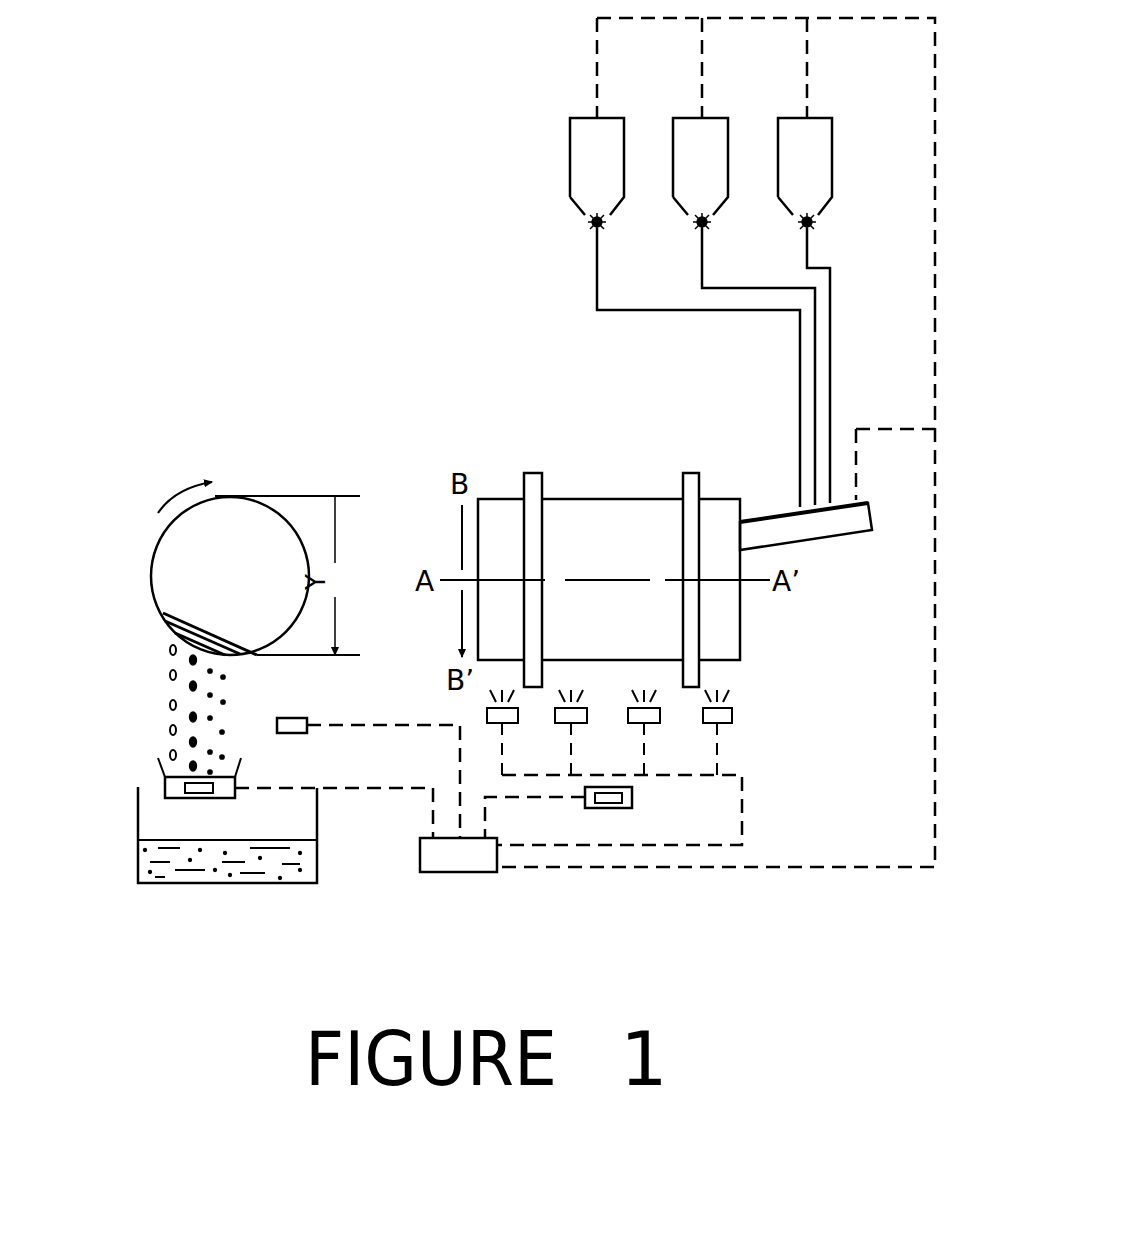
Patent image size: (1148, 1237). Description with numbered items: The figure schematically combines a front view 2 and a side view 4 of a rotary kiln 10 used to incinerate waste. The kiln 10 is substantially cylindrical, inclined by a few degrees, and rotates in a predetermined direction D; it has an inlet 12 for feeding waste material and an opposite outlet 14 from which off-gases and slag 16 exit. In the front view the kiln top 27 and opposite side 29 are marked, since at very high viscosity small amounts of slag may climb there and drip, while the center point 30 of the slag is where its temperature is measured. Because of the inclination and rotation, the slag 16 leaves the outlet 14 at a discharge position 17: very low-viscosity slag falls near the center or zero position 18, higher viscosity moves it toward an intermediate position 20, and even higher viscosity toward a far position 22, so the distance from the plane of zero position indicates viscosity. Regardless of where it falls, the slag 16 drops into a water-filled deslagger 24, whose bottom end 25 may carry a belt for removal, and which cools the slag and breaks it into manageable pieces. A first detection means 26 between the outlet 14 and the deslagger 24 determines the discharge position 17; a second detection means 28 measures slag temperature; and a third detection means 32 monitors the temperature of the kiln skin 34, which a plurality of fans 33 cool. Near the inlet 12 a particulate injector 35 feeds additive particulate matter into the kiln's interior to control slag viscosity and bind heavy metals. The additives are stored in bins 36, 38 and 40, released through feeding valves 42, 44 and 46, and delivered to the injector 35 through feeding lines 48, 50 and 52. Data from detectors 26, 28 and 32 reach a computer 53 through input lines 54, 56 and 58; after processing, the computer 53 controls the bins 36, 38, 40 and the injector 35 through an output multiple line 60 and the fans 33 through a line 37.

The front view 2 is at (260, 338).
The side view 4 is at (397, 233).
The rotary kiln 10 is at (578, 418).
The inlet 12 is at (740, 613).
The outlet 14 is at (235, 553).
The slag 16 is at (167, 613).
The discharge position 17 is at (193, 740).
The center or zero position 18 is at (223, 733).
The intermediate position 20 is at (210, 697).
The far position 22 is at (167, 648).
The deslagger 24 is at (302, 860).
The bottom end 25 is at (163, 877).
The first detection means 26 is at (180, 787).
The top 27 is at (228, 517).
The second detection means 28 is at (288, 728).
The opposite side 29 is at (295, 578).
The center point 30 is at (235, 633).
The third detection means 32 is at (610, 798).
The fans 33 is at (510, 723).
The skin 34 is at (718, 552).
The particulate injector 35 is at (802, 528).
The bin 36 is at (606, 147).
The line 37 is at (742, 828).
The bin 38 is at (711, 147).
The bin 40 is at (816, 147).
The feeding valve 42 is at (603, 222).
The feeding valve 44 is at (708, 222).
The feeding valve 46 is at (813, 222).
The feeding line 48 is at (597, 300).
The feeding line 50 is at (702, 280).
The feeding line 52 is at (830, 302).
The computer 53 is at (453, 860).
The input line 54 is at (423, 795).
The input line 56 is at (435, 727).
The input line 58 is at (495, 798).
The output multiple line 60 is at (730, 870).